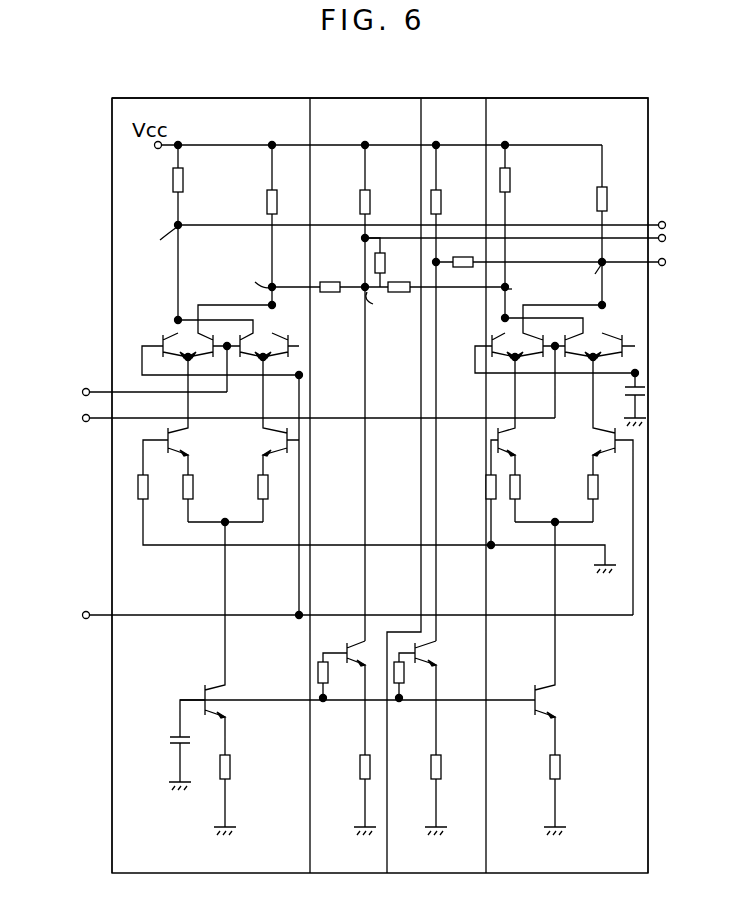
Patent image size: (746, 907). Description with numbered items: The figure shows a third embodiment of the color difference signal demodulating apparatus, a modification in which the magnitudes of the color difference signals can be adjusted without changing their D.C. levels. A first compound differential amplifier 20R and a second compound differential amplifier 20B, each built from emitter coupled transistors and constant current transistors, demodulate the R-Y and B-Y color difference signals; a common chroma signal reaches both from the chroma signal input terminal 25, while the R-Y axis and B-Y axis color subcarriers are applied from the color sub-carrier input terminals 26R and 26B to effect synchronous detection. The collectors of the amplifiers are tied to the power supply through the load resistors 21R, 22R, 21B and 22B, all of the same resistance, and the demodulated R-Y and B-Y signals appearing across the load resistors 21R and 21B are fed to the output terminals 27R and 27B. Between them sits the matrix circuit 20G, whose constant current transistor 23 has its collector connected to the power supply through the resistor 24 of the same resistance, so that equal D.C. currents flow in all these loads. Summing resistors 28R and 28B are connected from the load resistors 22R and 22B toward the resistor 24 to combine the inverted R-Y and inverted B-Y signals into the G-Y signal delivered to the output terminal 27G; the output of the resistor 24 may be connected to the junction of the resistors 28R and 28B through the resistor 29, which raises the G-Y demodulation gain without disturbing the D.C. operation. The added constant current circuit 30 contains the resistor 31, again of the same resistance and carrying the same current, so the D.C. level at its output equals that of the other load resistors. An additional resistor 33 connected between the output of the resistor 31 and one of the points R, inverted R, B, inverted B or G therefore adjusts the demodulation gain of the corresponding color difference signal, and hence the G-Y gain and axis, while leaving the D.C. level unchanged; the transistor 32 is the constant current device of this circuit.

The first compound differential amplifier 20R is at (270, 98).
The matrix circuit 20G is at (398, 98).
The constant current circuit 30 is at (465, 98).
The second compound differential amplifier 20B is at (590, 98).
The load resistor 21R is at (183, 185).
The load resistor 22R is at (278, 202).
The resistor 24 is at (371, 201).
The resistor 31 is at (442, 201).
The load resistor 21B is at (511, 185).
The load resistor 22B is at (608, 199).
The color difference signal output terminal 27R is at (666, 224).
The output terminal 27G is at (666, 240).
The color difference signal output terminal 27B is at (666, 264).
The resistor 29 is at (377, 257).
The additional resistor 33 is at (466, 269).
The summing resistor 28R is at (331, 293).
The summing resistor 28B is at (400, 293).
The color sub-carrier input terminal 26R is at (82, 392).
The color sub-carrier input terminal 26B is at (82, 420).
The chroma signal input terminal 25 is at (82, 617).
The constant current transistor 23 is at (360, 645).
The transistor 32 is at (430, 651).